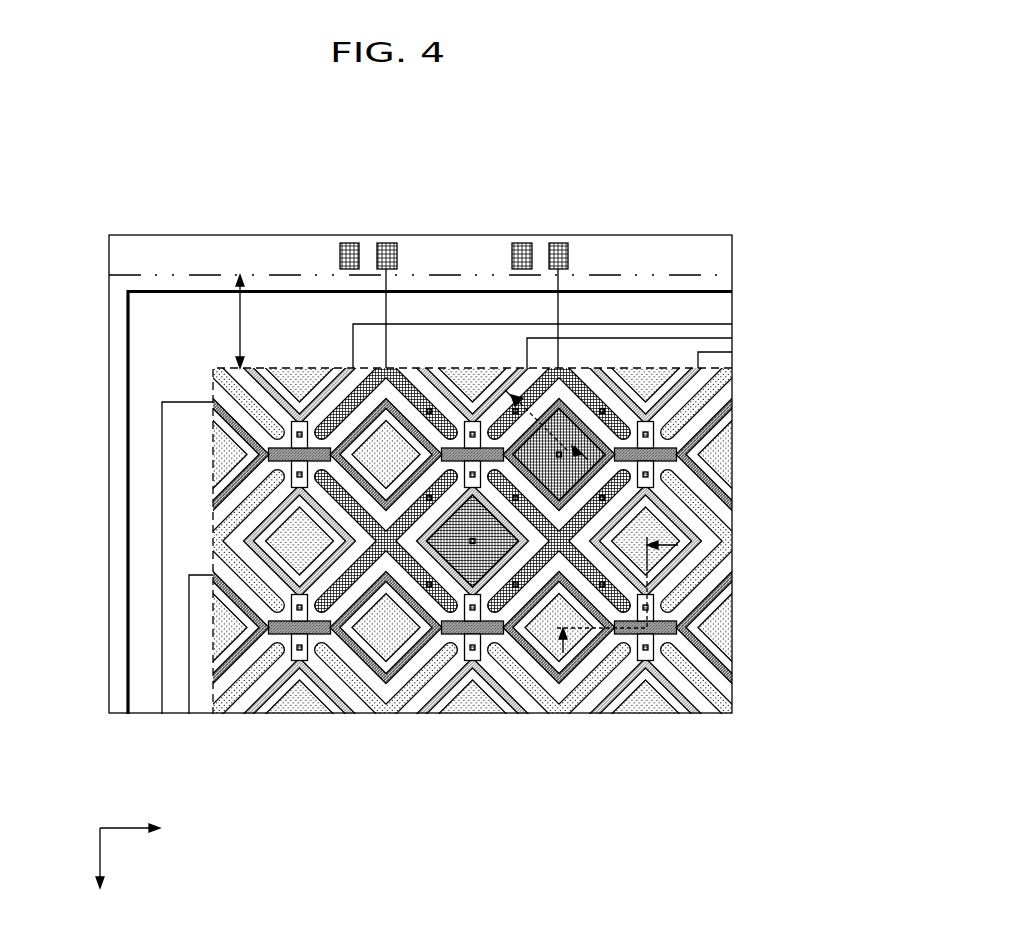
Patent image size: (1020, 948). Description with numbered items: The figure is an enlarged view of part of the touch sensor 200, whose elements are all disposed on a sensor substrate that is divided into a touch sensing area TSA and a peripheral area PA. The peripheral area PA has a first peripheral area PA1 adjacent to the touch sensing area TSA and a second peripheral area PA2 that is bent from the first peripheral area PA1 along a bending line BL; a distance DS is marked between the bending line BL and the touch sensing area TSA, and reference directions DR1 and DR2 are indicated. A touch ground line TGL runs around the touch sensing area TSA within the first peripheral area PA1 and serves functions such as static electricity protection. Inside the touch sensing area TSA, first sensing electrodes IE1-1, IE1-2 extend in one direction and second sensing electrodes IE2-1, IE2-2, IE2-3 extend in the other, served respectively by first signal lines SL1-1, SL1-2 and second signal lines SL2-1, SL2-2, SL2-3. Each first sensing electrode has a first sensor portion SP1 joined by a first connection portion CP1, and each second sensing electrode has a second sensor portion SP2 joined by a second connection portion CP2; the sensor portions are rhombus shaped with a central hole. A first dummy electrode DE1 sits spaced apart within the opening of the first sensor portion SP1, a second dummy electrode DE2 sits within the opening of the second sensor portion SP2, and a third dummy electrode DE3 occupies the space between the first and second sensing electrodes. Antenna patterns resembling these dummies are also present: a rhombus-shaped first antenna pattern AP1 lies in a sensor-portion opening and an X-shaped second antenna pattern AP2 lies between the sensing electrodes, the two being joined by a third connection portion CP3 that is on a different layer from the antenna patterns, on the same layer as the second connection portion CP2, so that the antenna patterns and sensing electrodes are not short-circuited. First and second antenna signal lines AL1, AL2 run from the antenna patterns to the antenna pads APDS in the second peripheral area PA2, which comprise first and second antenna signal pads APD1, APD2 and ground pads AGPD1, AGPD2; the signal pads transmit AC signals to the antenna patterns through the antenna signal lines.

The touch sensor 200 is at (421, 437).
The second peripheral area PA2 is at (118, 250).
The bending line BL is at (109, 275).
The first peripheral area PA1 is at (118, 328).
The touch ground line TGL is at (128, 368).
The touch sensing area TSA is at (428, 521).
The distance DS is at (228, 321).
The antenna pads APDS is at (451, 196).
The ground pad AGPD1 is at (349, 242).
The first antenna signal pad APD1 is at (386, 242).
The ground pad AGPD2 is at (522, 242).
The second antenna signal pad APD2 is at (557, 217).
The first antenna signal line AL1 is at (386, 305).
The second antenna signal line AL2 is at (558, 305).
The second signal line SL2-1 is at (450, 333).
The second signal line SL2-2 is at (582, 338).
The second signal line SL2-3 is at (732, 352).
The first signal line SL1-1 is at (162, 497).
The first signal line SL1-2 is at (189, 643).
The first antenna pattern AP1 is at (562, 437).
The second antenna pattern AP2 is at (562, 400).
The first sensing electrode IE1-1 is at (486, 384).
The first sensing electrode IE1-2 is at (483, 667).
The second sensing electrode IE2-1 is at (245, 717).
The second sensing electrode IE2-2 is at (418, 717).
The second sensing electrode IE2-3 is at (681, 541).
The first connection portion CP1 is at (670, 618).
The second connection portion CP2 is at (653, 640).
The third connection portion CP3 is at (620, 466).
The first sensor portion SP1 is at (517, 640).
The second sensor portion SP2 is at (660, 502).
The first dummy electrode DE1 is at (547, 640).
The second dummy electrode DE2 is at (663, 533).
The third dummy electrode DE3 is at (732, 543).
The first direction DR1 is at (100, 874).
The second direction DR2 is at (152, 831).
The peripheral area PA is at (678, 817).